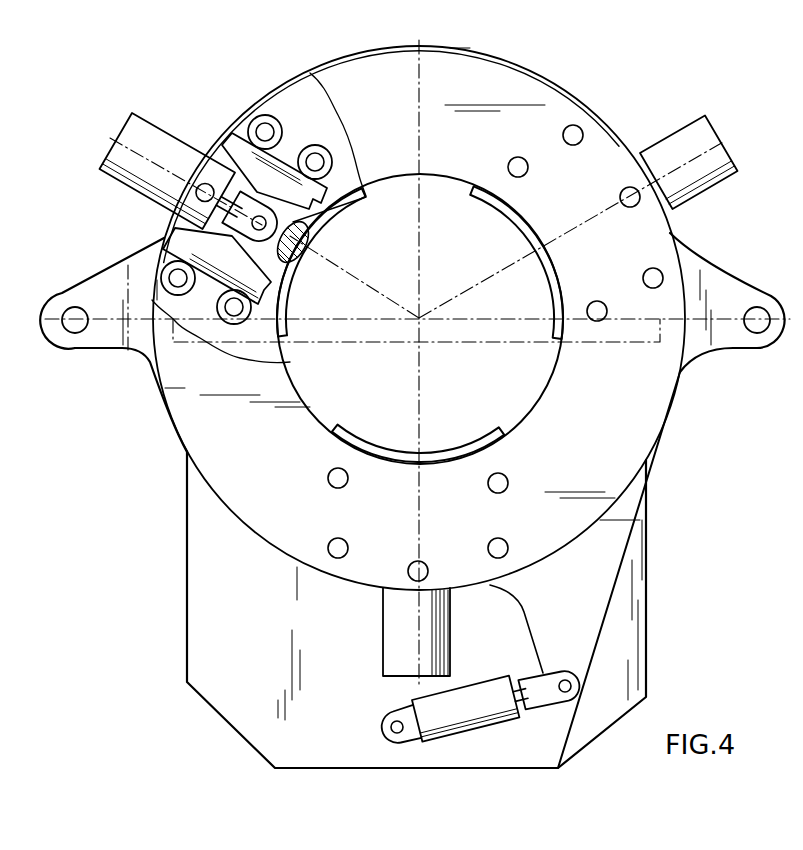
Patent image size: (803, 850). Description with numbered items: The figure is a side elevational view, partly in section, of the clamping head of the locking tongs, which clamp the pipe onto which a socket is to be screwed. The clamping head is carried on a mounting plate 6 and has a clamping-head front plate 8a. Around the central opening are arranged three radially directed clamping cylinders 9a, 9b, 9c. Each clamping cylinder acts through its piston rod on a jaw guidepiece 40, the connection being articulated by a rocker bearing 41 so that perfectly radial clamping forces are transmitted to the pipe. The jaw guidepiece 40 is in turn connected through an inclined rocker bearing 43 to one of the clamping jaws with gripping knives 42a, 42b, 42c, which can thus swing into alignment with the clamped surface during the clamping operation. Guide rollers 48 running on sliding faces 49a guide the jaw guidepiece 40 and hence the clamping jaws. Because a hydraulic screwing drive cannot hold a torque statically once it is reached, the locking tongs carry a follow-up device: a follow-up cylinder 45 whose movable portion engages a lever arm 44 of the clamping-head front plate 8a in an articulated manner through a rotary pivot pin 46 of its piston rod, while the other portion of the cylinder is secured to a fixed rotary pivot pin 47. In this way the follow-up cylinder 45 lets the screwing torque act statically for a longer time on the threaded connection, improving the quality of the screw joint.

The mounting plate 6 is at (741, 349).
The clamping-head front plate 8a is at (227, 510).
The clamping cylinder 9a is at (114, 141).
The clamping cylinder 9b is at (705, 192).
The clamping cylinder 9c is at (383, 652).
The jaw guidepiece 40 is at (289, 165).
The rocker bearing 41 is at (261, 220).
The clamping jaw with gripping knives 42a is at (333, 224).
The clamping jaw with gripping knives 42b is at (548, 282).
The clamping jaw with gripping knives 42c is at (443, 448).
The inclined rocker bearing 43 is at (300, 257).
The lever arm 44 is at (600, 638).
The follow-up cylinder 45 is at (478, 738).
The rotary pivot pin of the piston rod 46 is at (568, 692).
The rotary pivot pin of the follow-up cylinder 47 is at (397, 735).
The guide roller 48 is at (253, 119).
The sliding face of the guide rollers 49a is at (172, 236).